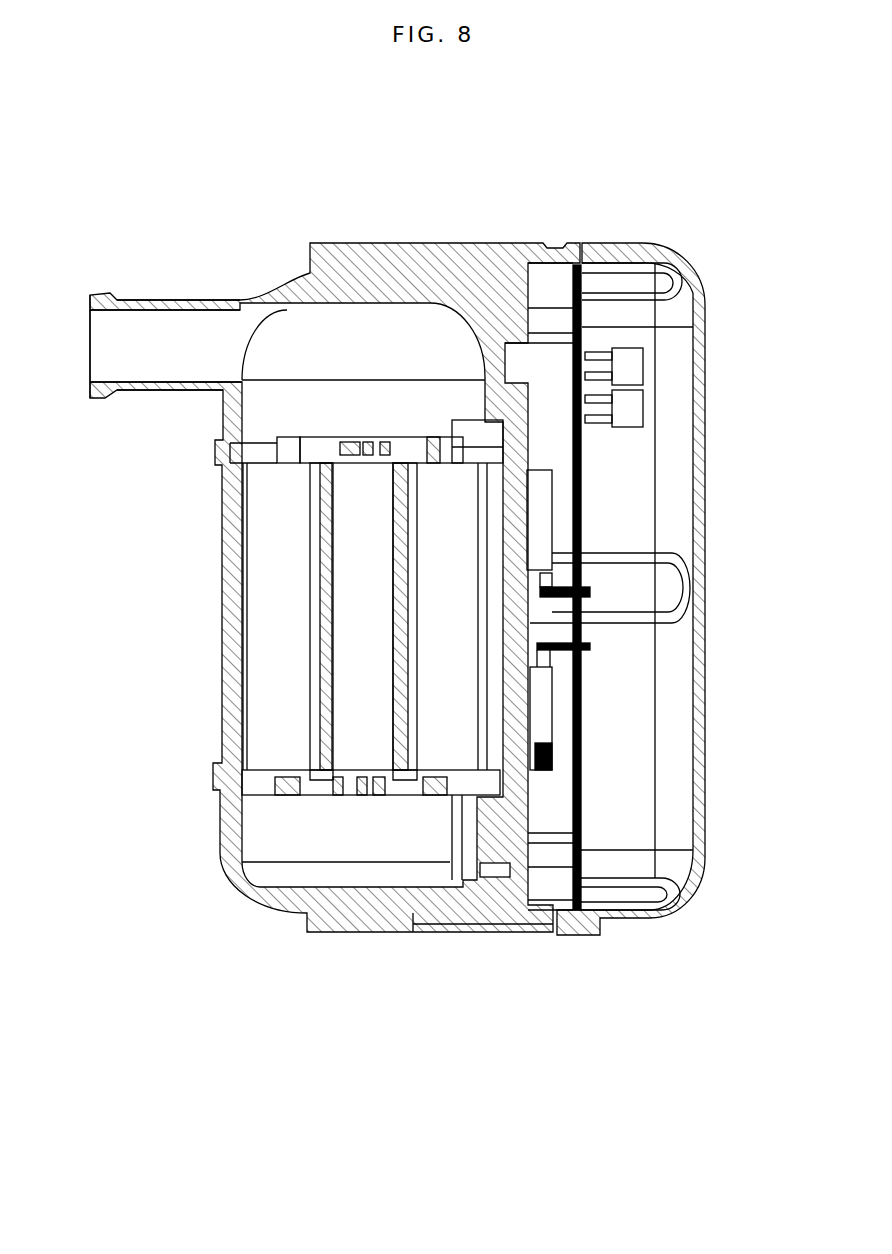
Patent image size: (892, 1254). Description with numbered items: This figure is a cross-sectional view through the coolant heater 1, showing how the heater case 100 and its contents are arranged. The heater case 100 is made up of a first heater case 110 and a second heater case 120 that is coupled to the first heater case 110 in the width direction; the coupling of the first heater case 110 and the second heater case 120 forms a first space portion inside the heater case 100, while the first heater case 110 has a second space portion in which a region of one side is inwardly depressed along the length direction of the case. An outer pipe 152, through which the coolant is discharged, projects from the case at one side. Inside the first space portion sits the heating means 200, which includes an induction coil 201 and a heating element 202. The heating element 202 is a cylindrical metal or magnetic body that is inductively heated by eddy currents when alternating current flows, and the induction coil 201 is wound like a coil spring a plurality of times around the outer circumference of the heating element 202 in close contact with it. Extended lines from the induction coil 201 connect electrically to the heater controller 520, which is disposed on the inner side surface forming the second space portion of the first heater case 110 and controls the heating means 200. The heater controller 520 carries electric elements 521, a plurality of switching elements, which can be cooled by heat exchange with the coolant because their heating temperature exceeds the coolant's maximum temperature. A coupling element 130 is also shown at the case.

The coolant heater 1 is at (305, 202).
The heater case 100 is at (620, 1020).
The first heater case 110 is at (462, 935).
The second heater case 120 is at (627, 927).
The coupling hook 130 is at (532, 603).
The outer pipe 152 is at (135, 393).
The heating means 200 is at (143, 550).
The induction coil 201 is at (280, 601).
The heating element 202 is at (322, 554).
The heater controller 520 is at (580, 482).
The electric elements 521 is at (557, 518).